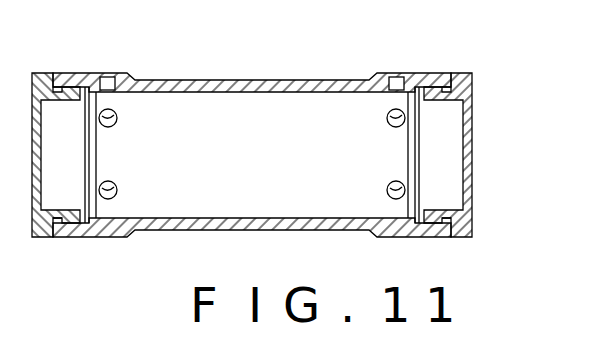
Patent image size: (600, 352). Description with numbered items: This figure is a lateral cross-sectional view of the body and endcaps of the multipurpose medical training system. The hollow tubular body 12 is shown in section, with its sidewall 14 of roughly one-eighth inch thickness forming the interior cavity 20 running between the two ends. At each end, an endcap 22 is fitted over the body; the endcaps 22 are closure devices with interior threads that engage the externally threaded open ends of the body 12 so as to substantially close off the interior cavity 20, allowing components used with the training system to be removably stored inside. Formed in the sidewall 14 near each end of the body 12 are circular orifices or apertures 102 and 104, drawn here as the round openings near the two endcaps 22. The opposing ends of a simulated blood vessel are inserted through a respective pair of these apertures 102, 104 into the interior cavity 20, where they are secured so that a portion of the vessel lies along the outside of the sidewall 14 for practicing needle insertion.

The hollow tubular body 12 is at (252, 128).
The sidewall 14 is at (267, 80).
The interior cavity 20 is at (313, 125).
The endcaps 22 is at (43, 80).
The apertures 102 is at (389, 75).
The apertures 104 is at (116, 193).